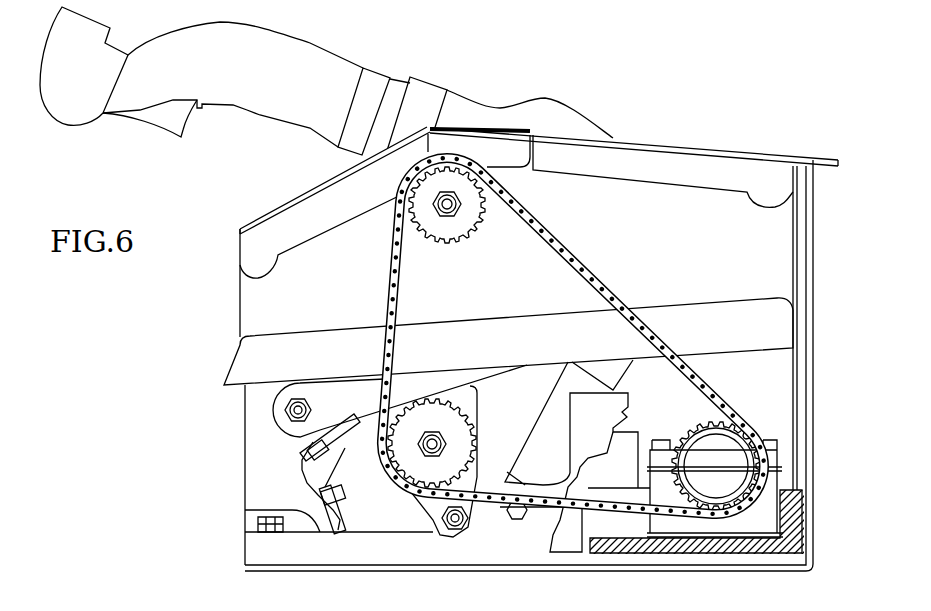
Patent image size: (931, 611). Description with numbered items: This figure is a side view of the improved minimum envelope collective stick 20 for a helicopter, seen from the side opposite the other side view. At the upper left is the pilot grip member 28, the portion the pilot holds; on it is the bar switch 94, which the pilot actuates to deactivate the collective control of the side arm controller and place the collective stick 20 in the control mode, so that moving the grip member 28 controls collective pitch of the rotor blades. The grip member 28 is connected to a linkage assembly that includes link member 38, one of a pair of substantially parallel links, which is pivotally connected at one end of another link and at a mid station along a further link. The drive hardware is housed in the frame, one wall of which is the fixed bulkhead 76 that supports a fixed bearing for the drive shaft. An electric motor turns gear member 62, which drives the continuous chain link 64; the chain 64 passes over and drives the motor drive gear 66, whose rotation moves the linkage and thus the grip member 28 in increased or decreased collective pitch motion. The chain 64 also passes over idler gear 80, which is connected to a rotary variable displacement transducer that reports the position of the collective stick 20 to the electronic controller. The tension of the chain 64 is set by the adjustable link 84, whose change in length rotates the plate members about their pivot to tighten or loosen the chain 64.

The collective stick 20 is at (807, 129).
The pilot grip member 28 is at (240, 82).
The bar switch 94 is at (183, 117).
The fixed bulkhead 76 is at (775, 188).
The link member 38 is at (333, 408).
The adjustable link 84 is at (336, 449).
The idler gear 80 is at (418, 424).
The motor drive gear 66 is at (436, 237).
The gear member 62 is at (706, 427).
The continuous chain link 64 is at (577, 261).